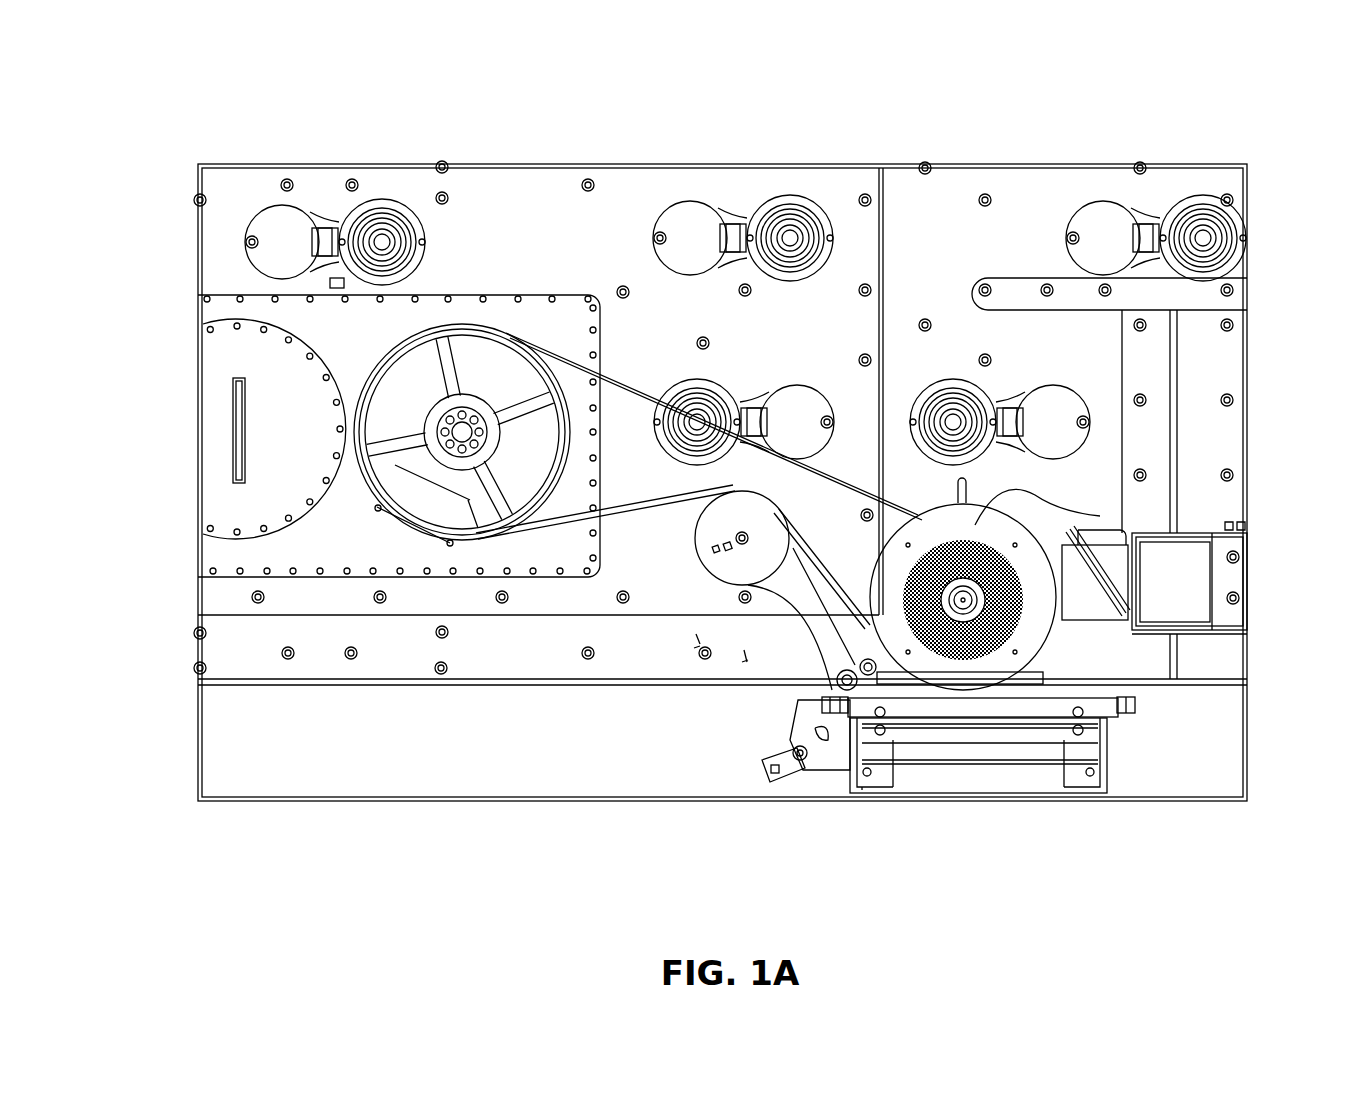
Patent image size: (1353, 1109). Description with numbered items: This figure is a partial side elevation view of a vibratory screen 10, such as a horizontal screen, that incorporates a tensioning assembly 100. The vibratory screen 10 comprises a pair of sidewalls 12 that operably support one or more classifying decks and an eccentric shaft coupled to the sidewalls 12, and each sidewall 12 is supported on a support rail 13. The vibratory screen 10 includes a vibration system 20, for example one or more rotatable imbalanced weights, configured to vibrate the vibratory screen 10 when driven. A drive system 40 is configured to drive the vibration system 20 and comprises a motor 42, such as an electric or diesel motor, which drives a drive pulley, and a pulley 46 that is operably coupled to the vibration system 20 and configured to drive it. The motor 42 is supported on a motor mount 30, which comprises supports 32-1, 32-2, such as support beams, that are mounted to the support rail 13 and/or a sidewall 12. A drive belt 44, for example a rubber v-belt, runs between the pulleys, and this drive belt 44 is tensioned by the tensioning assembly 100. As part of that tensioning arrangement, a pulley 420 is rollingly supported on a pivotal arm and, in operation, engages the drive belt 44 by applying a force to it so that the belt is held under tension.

The vibratory screen 10 is at (138, 172).
The sidewall 12 is at (497, 243).
The support rail 13 is at (1250, 732).
The vibration system 20 is at (187, 357).
The motor mount 30 is at (1068, 681).
The support 32-1 is at (872, 790).
The support 32-2 is at (1093, 790).
The drive system 40 is at (580, 713).
The motor 42 is at (1080, 515).
The drive belt 44 is at (648, 392).
The pulley 46 is at (597, 442).
The tensioning assembly 100 is at (805, 808).
The pulley 420 is at (713, 592).